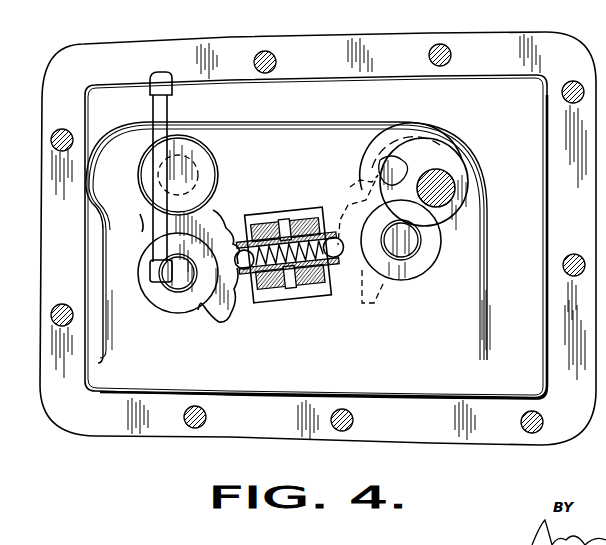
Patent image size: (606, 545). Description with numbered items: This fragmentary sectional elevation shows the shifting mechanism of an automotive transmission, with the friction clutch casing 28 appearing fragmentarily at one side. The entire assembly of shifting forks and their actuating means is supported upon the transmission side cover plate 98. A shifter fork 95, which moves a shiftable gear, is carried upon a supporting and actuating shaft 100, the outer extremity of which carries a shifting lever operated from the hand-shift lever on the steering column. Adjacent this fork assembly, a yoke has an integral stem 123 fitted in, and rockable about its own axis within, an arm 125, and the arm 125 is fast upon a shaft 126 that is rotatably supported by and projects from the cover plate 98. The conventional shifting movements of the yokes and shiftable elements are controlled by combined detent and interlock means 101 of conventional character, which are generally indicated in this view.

The casing 28 is at (345, 216).
The shifter fork 95 is at (160, 80).
The transmission side cover plate 98 is at (160, 426).
The supporting and actuating shaft 100 is at (181, 285).
The combined detent and interlock means 101 is at (327, 212).
The stem 123 is at (447, 196).
The arm 125 is at (470, 177).
The shaft 126 is at (405, 245).